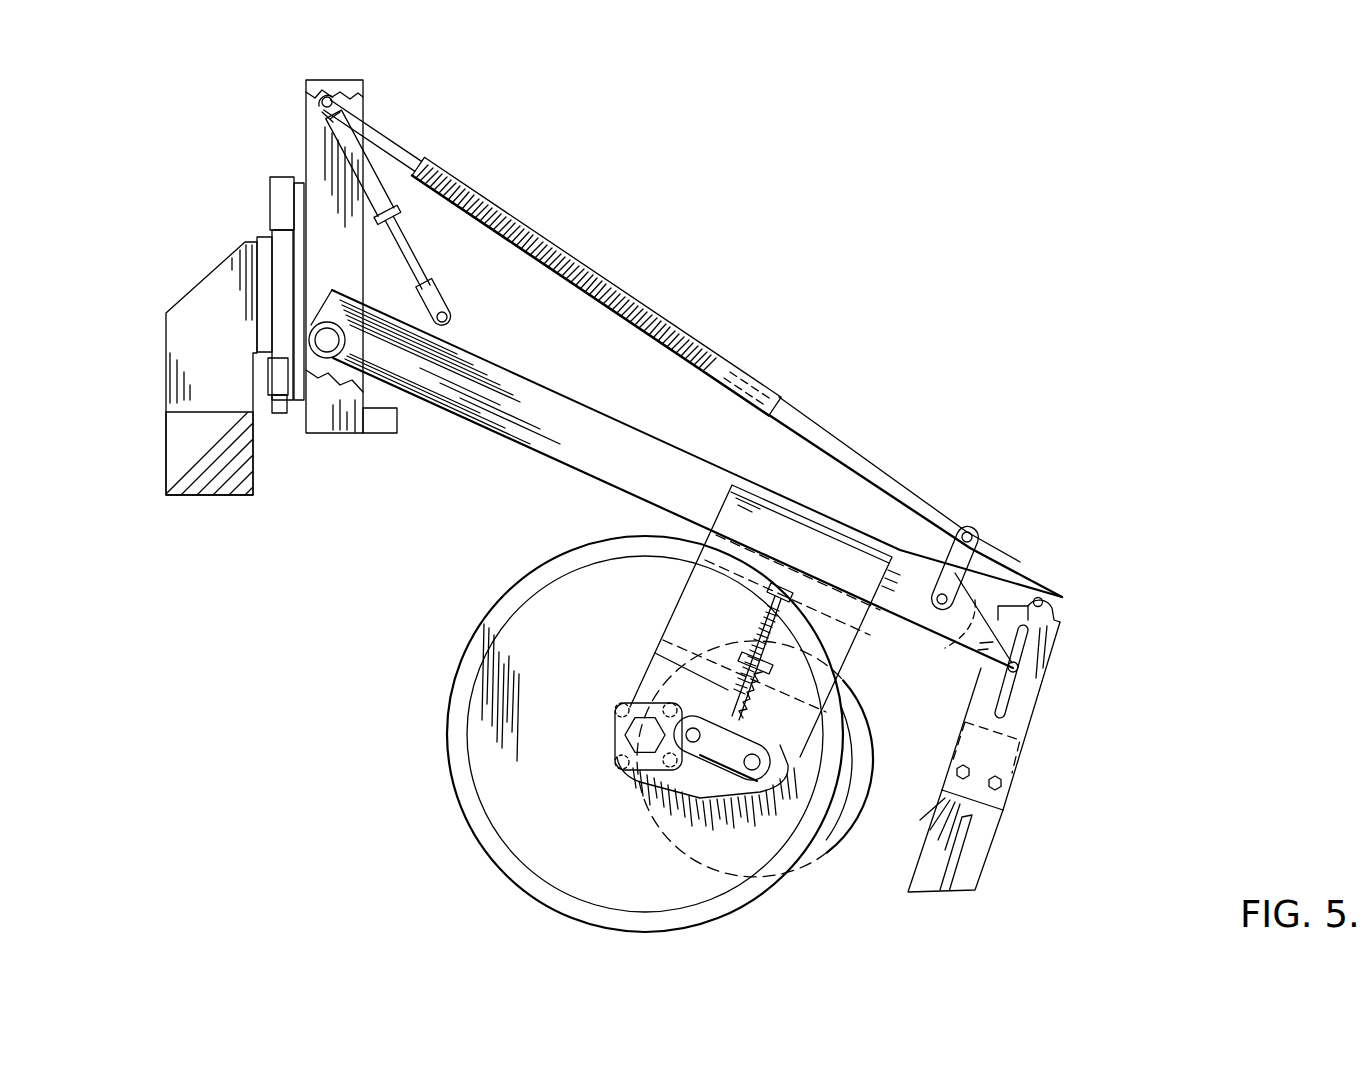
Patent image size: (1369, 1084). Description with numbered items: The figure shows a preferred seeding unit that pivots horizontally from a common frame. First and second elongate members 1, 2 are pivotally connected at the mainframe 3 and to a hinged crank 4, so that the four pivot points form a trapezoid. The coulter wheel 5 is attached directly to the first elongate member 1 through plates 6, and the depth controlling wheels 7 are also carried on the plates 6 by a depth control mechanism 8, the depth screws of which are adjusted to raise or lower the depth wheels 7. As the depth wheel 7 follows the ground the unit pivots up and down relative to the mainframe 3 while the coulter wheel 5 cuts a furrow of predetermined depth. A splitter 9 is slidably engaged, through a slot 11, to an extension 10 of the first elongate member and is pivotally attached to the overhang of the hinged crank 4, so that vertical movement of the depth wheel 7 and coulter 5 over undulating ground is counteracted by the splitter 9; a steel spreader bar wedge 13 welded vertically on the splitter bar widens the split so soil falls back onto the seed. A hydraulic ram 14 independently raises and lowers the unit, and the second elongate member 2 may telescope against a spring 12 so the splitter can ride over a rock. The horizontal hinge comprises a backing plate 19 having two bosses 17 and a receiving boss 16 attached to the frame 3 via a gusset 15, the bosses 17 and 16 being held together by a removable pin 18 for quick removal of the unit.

The first elongate member 1 is at (538, 453).
The second elongate member 2 is at (775, 390).
The mainframe 3 is at (203, 487).
The hinged crank 4 is at (1005, 562).
The coulter wheel 5 is at (542, 853).
The plates 6 is at (800, 530).
The depth controlling wheels 7 is at (817, 833).
The depth control mechanism 8 is at (840, 608).
The splitter 9 is at (1008, 807).
The extension of the first elongate member 10 is at (1000, 648).
The slot 11 is at (1003, 700).
The spring 12 is at (500, 208).
The spreader bar wedge 13 is at (960, 865).
The hydraulic ram 14 is at (382, 170).
The gusset 15 is at (190, 305).
The receiving boss 16 is at (262, 252).
The bosses 17 is at (270, 200).
The removable pin 18 is at (270, 178).
The backing plate 19 is at (303, 178).